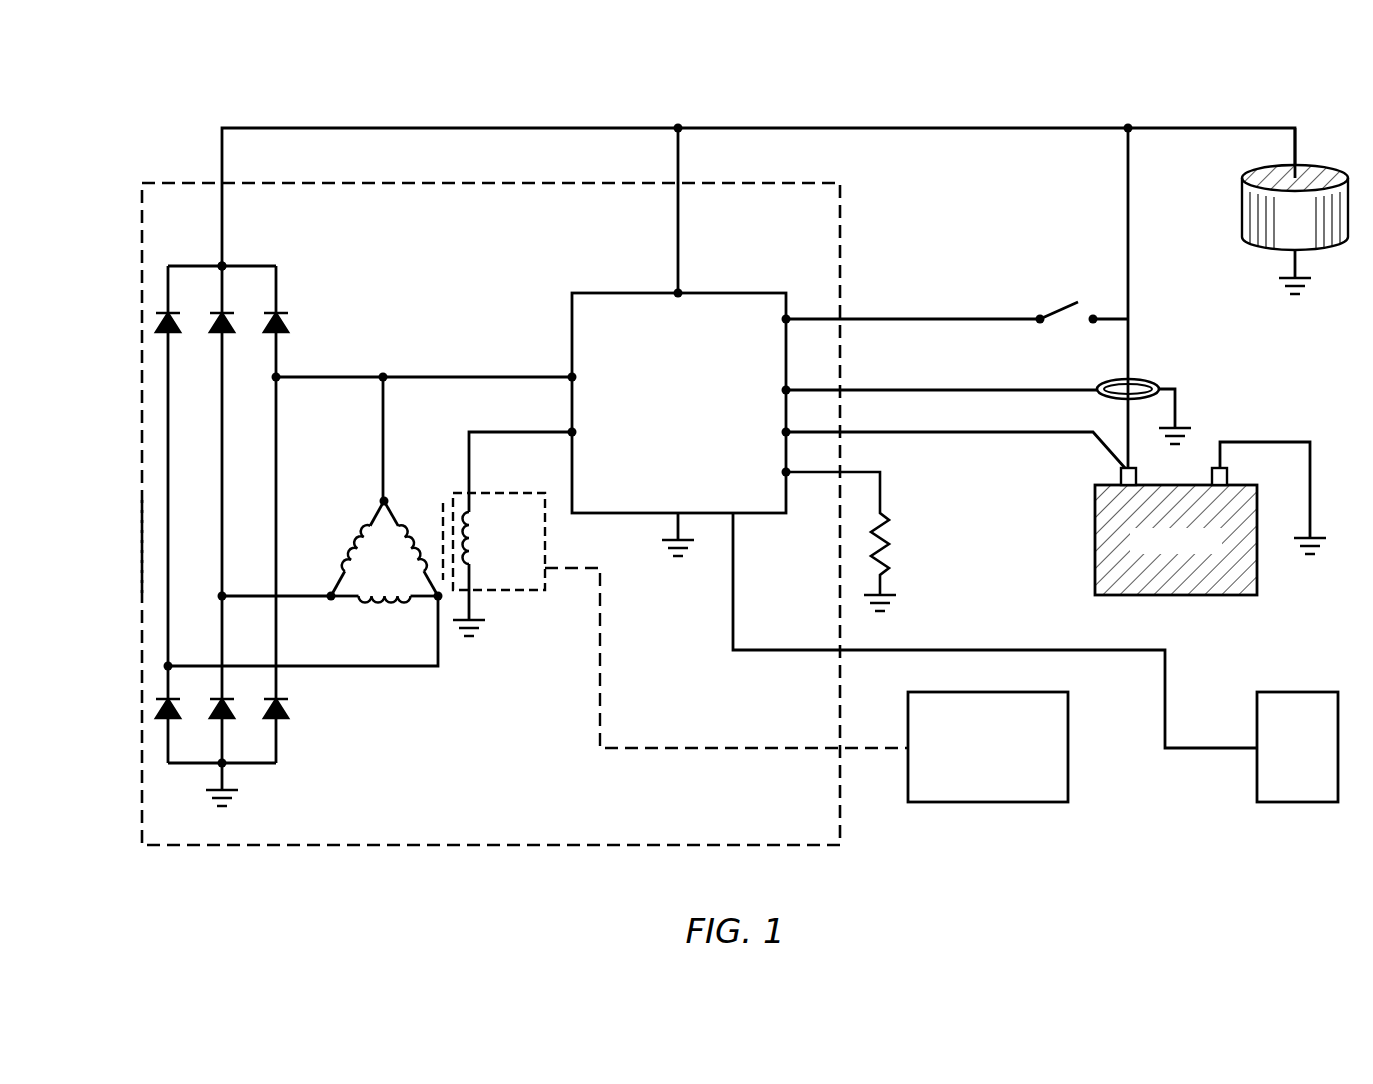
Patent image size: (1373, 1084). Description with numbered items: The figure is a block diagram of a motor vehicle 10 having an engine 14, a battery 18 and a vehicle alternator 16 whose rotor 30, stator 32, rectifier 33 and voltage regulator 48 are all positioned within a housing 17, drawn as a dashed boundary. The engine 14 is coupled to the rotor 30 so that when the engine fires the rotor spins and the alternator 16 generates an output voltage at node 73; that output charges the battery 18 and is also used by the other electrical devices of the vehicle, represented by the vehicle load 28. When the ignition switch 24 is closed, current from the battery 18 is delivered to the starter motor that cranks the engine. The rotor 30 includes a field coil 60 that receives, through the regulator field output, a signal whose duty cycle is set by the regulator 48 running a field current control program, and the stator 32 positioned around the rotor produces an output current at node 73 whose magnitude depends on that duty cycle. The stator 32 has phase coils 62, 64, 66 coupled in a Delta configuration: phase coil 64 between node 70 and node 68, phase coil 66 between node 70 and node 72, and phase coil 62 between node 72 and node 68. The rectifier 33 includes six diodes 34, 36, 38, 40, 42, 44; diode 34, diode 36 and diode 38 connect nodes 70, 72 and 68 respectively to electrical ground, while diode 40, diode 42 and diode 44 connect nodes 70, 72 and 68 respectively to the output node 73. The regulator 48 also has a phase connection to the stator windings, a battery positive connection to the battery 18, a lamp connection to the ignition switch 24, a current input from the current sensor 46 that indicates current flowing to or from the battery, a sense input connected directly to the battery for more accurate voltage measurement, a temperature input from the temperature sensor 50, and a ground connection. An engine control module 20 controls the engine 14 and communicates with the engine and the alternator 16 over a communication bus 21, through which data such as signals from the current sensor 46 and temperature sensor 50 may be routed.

The motor vehicle 10 is at (140, 135).
The engine 14 is at (981, 803).
The vehicle alternator 16 is at (160, 223).
The housing 17 is at (142, 553).
The battery 18 is at (1233, 596).
The engine control module 20 is at (1292, 803).
The communication bus 21 is at (728, 642).
The ignition switch 24 is at (1060, 300).
The vehicle load 28 is at (1325, 250).
The rotor 30 is at (512, 592).
The stator 32 is at (343, 516).
The rectifier 33 is at (176, 790).
The diode 34 is at (292, 712).
The diode 36 is at (246, 718).
The diode 38 is at (157, 710).
The diode 40 is at (290, 325).
The diode 42 is at (228, 330).
The diode 44 is at (157, 323).
The current sensor 46 is at (1140, 380).
The voltage regulator 48 is at (624, 292).
The temperature sensor 50 is at (886, 543).
The field coil 60 is at (472, 535).
The phase coil 62 is at (385, 600).
The phase coil 64 is at (416, 535).
The phase coil 66 is at (347, 538).
The node 68 is at (437, 600).
The node 70 is at (392, 497).
The node 72 is at (325, 600).
The node 73 is at (224, 264).